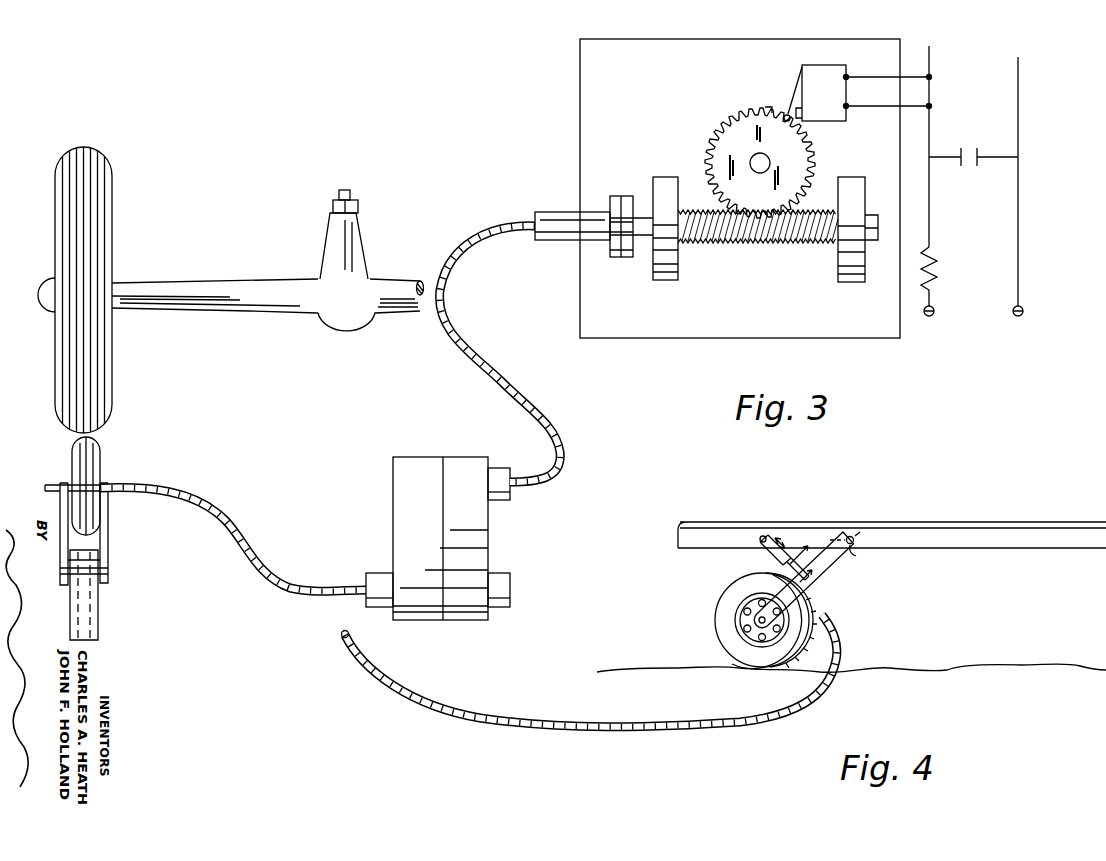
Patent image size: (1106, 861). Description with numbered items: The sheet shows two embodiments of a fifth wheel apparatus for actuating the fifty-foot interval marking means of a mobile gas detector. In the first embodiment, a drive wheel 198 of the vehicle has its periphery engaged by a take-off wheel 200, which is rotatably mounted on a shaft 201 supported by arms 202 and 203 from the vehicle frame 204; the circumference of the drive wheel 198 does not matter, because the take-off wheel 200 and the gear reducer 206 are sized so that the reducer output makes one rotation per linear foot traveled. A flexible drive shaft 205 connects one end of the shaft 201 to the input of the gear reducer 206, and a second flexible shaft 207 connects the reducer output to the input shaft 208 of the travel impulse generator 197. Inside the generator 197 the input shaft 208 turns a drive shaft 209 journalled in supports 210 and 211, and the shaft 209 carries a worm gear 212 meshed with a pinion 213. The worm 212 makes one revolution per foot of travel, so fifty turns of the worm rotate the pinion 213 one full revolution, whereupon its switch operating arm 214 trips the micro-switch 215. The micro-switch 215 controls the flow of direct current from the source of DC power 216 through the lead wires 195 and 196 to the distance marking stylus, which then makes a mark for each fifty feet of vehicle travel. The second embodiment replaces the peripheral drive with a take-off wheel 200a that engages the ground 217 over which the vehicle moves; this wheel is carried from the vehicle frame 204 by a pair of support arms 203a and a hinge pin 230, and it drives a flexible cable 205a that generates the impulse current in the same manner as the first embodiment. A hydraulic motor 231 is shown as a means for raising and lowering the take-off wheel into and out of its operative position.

In FIG. 3, the lead wire 195 is at (929, 60).
In FIG. 3, the lead wire 196 is at (1018, 72).
In FIG. 3, the travel impulse generator 197 is at (721, 351).
In FIG. 3, the drive wheel 198 is at (108, 217).
In FIG. 3, the take-off wheel 200 is at (95, 458).
In FIG. 3, the shaft 201 is at (53, 484).
In FIG. 3, the arm 202 is at (66, 555).
In FIG. 3, the arm 203 is at (108, 553).
In FIG. 3, the vehicle frame 204 is at (95, 625).
In FIG. 4, the vehicle frame 204 is at (1030, 549).
In FIG. 3, the flexible drive shaft 205 is at (225, 534).
In FIG. 3, the gear reducer 206 is at (388, 499).
In FIG. 3, the second flexible shaft 207 is at (551, 398).
In FIG. 3, the input shaft 208 is at (546, 217).
In FIG. 3, the drive shaft 209 is at (640, 246).
In FIG. 3, the support 210 is at (678, 268).
In FIG. 3, the support 211 is at (845, 271).
In FIG. 3, the worm gear 212 is at (768, 242).
In FIG. 3, the pinion 213 is at (800, 158).
In FIG. 3, the switch operating arm 214 is at (768, 106).
In FIG. 3, the micro-switch 215 is at (826, 58).
In FIG. 3, the source of DC power 216 is at (993, 312).
In FIG. 4, the ground 217 is at (946, 668).
In FIG. 4, the take-off wheel 200a is at (735, 598).
In FIG. 4, the support arm 203a is at (825, 582).
In FIG. 4, the flexible cable 205a is at (462, 700).
In FIG. 4, the hinge pin 230 is at (856, 549).
In FIG. 4, the hydraulic motor 231 is at (765, 565).